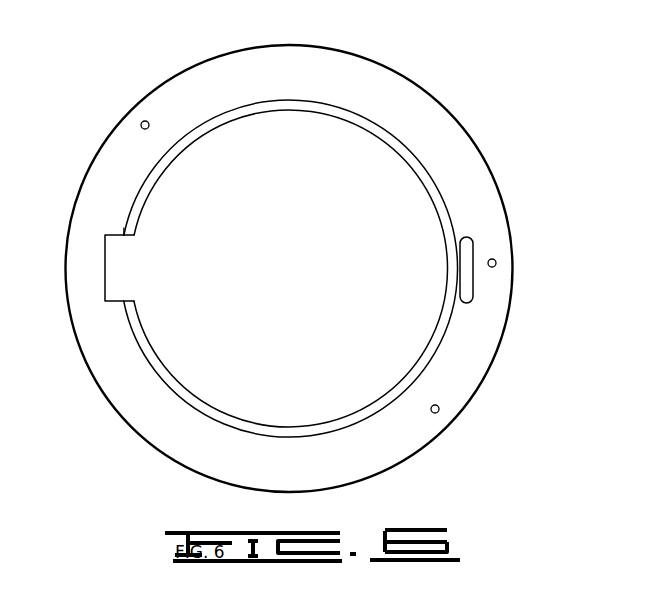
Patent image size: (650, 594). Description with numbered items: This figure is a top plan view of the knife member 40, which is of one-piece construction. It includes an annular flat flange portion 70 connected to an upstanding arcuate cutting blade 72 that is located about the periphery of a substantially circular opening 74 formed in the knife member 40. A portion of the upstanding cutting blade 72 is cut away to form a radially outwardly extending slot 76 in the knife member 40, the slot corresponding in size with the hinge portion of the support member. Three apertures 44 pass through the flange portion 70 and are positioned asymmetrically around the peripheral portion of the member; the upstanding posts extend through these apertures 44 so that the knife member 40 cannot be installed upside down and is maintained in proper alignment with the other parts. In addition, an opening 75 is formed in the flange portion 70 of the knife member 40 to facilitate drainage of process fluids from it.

The knife member 40 is at (457, 117).
The apertures 44 is at (143, 121).
The annular flat flange portion 70 is at (472, 186).
The upstanding arcuate cutting blade 72 is at (411, 158).
The substantially circular opening 74 is at (138, 202).
The openings 75 is at (470, 258).
The radially outwardly extending slot 76 is at (105, 269).